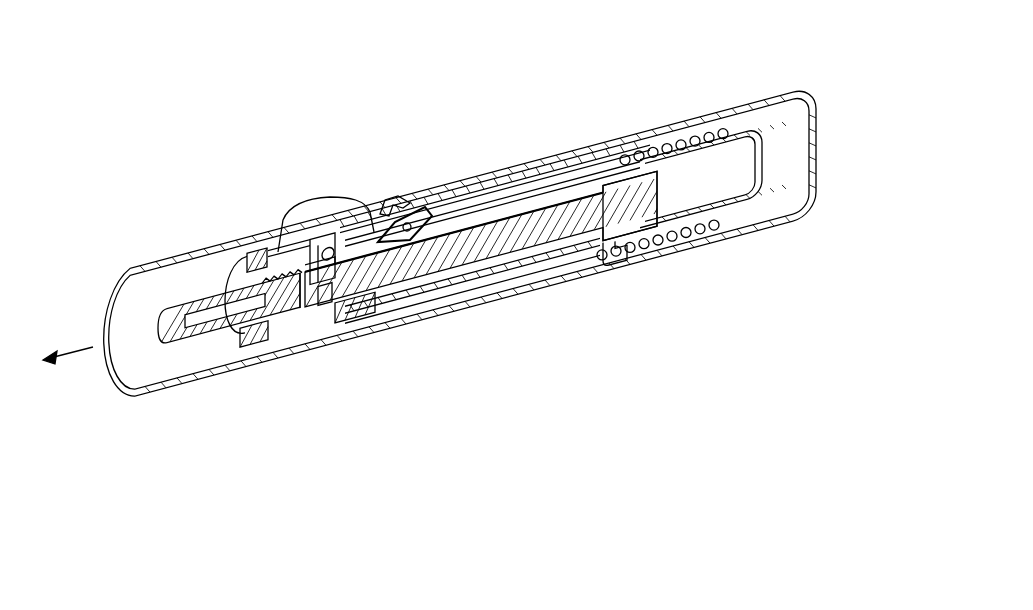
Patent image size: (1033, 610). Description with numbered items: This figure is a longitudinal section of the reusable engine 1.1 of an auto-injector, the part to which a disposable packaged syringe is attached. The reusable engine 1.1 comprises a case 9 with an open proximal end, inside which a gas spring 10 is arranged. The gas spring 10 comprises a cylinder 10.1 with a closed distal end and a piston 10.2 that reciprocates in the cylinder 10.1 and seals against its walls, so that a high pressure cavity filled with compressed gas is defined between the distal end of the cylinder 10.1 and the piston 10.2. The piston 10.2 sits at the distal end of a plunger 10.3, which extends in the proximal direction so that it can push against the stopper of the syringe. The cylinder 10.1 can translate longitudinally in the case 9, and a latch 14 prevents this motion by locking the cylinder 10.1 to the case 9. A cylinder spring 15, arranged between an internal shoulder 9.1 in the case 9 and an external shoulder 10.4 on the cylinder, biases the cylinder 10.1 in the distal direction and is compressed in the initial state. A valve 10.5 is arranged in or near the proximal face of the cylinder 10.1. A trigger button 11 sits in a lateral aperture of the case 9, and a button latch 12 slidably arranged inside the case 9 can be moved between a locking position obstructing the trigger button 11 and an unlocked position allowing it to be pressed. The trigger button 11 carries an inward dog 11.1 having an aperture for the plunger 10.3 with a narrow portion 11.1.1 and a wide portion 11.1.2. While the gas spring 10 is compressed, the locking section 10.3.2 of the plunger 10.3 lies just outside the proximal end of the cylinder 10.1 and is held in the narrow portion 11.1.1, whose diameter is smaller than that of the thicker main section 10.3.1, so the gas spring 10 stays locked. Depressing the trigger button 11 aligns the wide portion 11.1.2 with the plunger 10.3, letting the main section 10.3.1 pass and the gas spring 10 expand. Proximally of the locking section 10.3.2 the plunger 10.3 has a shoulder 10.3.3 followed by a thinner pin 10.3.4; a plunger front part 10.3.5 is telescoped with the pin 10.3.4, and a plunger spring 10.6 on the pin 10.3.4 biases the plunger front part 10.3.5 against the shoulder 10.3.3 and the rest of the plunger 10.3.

The reusable engine 1.1 is at (261, 78).
The case 9 is at (150, 266).
The internal shoulder 9.1 is at (610, 258).
The gas spring 10 is at (740, 128).
The cylinder 10.1 is at (528, 193).
The piston 10.2 is at (623, 195).
The plunger 10.3 is at (549, 256).
The main section 10.3.1 is at (473, 252).
The locking section 10.3.2 is at (340, 300).
The shoulder 10.3.3 is at (322, 312).
The pin 10.3.4 is at (258, 314).
The plunger front part 10.3.5 is at (178, 337).
The external shoulder 10.4 is at (724, 235).
The valve 10.5 is at (379, 206).
The plunger spring 10.6 is at (289, 314).
The trigger button 11 is at (353, 210).
The dog 11.1 is at (340, 318).
The narrow portion 11.1.1 is at (262, 250).
The wide portion 11.1.2 is at (313, 237).
The button latch 12 is at (255, 262).
The latch 14 is at (417, 215).
The cylinder spring 15 is at (677, 140).